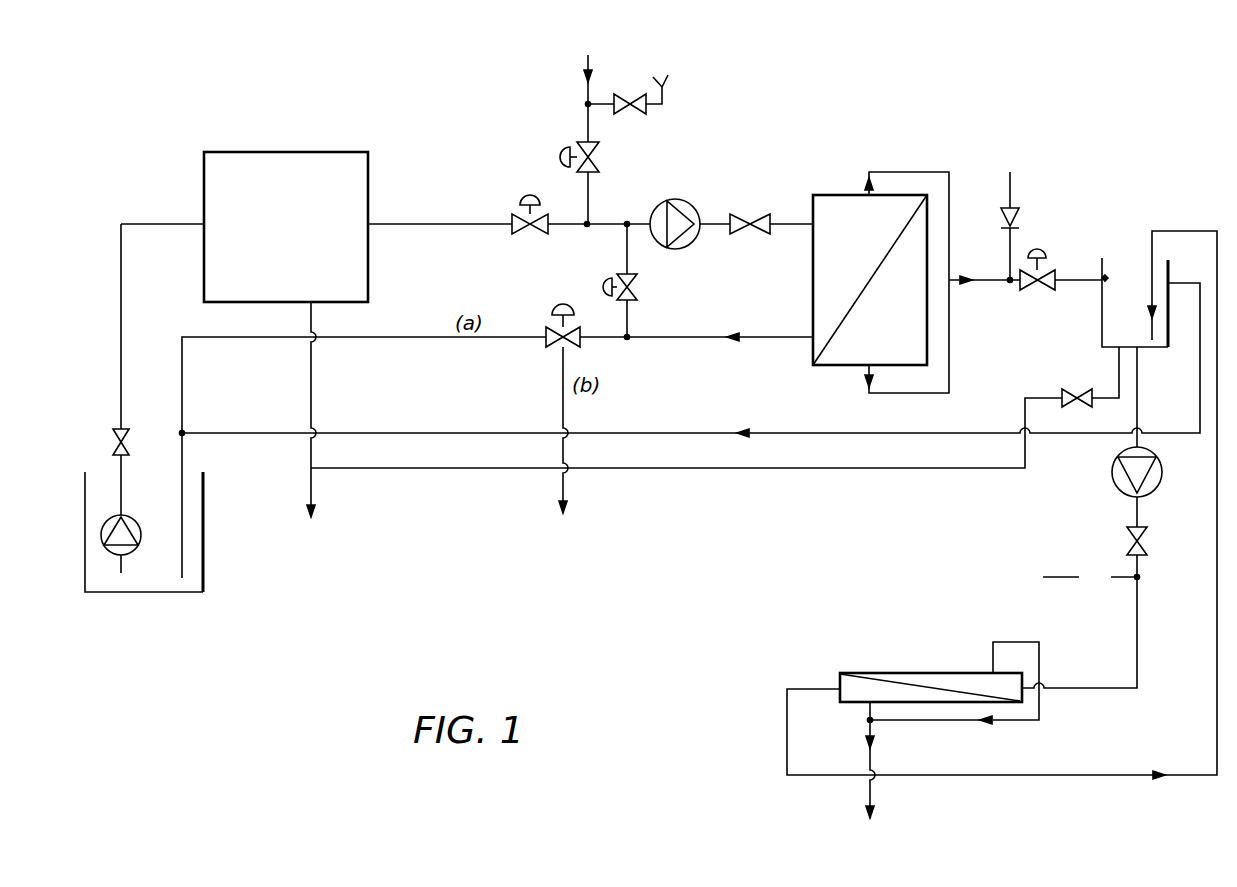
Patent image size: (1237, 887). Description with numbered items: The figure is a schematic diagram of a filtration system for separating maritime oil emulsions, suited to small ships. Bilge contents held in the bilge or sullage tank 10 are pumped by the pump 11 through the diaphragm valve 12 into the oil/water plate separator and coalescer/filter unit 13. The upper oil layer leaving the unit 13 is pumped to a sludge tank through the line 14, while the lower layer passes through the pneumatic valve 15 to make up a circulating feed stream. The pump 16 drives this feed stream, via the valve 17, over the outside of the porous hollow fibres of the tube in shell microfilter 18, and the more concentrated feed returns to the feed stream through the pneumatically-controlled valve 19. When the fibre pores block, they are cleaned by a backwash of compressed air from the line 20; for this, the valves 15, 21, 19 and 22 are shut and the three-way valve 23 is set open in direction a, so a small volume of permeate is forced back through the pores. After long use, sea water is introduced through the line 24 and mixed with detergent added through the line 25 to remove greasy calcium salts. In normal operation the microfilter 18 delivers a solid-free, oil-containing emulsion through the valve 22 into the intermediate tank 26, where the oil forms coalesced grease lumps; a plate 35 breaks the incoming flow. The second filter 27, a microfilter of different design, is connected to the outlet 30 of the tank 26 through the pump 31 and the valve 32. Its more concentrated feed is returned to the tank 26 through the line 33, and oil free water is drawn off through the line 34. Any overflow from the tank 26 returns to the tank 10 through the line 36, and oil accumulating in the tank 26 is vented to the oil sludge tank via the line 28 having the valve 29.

The tank 10 is at (207, 578).
The pump 11 is at (135, 558).
The diaphragm valve 12 is at (113, 441).
The separator/filter unit 13 is at (278, 149).
The line 14 is at (313, 492).
The pneumatic valve 15 is at (514, 222).
The pump 16 is at (660, 197).
The valve 17 is at (748, 232).
The microfilter 18 is at (823, 193).
The pneumatically-controlled valve 19 is at (637, 288).
The line 20 is at (1013, 180).
The valve 21 is at (602, 158).
The valve 22 is at (1052, 268).
The 3-way valve 23 is at (548, 333).
The line 24 is at (592, 62).
The line 25 is at (665, 95).
The intermediate tank 26 is at (1098, 322).
The second filter 27 is at (917, 672).
The line 28 is at (815, 470).
The valve 29 is at (1077, 392).
The outlet 30 is at (1138, 380).
The pump 31 is at (1108, 478).
The valve 32 is at (1128, 538).
The line 33 is at (1080, 782).
The line 34 is at (873, 792).
The plate 35 is at (1107, 278).
The line 36 is at (693, 432).